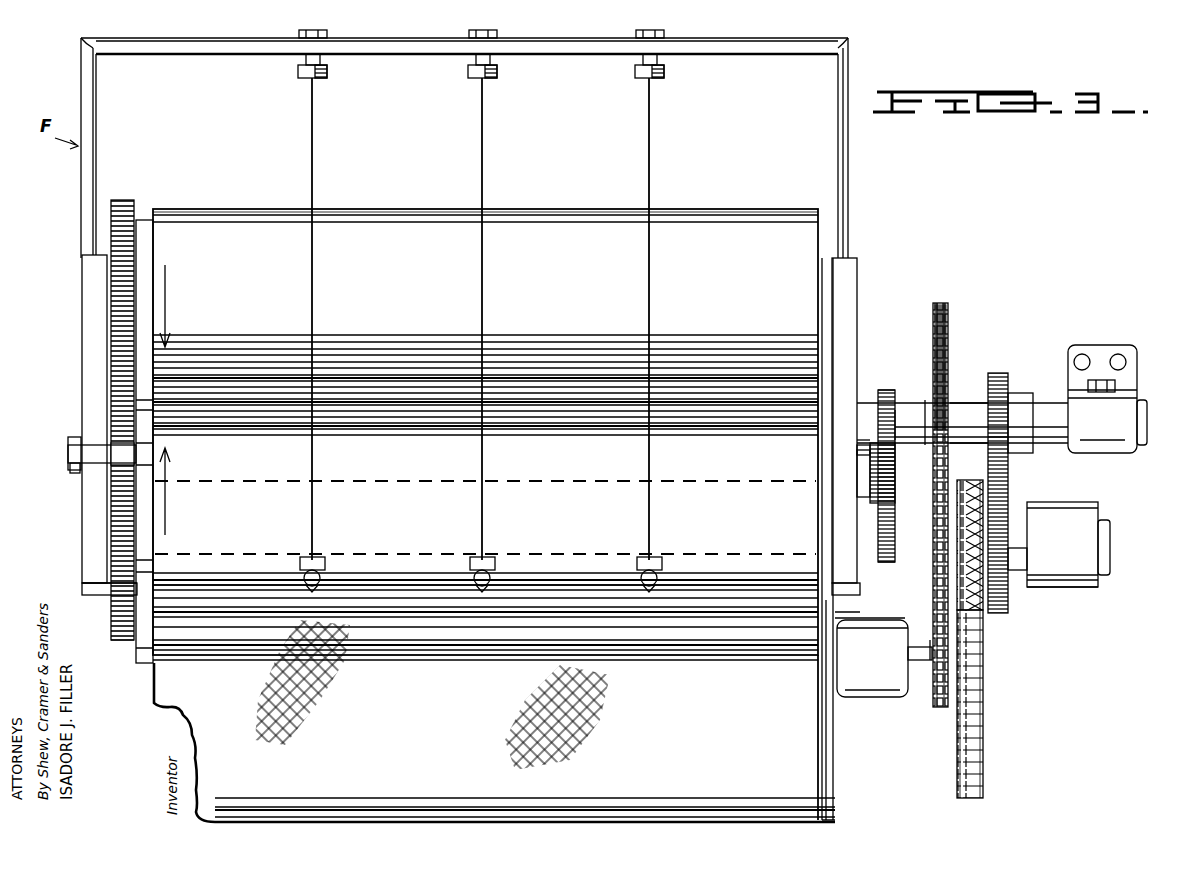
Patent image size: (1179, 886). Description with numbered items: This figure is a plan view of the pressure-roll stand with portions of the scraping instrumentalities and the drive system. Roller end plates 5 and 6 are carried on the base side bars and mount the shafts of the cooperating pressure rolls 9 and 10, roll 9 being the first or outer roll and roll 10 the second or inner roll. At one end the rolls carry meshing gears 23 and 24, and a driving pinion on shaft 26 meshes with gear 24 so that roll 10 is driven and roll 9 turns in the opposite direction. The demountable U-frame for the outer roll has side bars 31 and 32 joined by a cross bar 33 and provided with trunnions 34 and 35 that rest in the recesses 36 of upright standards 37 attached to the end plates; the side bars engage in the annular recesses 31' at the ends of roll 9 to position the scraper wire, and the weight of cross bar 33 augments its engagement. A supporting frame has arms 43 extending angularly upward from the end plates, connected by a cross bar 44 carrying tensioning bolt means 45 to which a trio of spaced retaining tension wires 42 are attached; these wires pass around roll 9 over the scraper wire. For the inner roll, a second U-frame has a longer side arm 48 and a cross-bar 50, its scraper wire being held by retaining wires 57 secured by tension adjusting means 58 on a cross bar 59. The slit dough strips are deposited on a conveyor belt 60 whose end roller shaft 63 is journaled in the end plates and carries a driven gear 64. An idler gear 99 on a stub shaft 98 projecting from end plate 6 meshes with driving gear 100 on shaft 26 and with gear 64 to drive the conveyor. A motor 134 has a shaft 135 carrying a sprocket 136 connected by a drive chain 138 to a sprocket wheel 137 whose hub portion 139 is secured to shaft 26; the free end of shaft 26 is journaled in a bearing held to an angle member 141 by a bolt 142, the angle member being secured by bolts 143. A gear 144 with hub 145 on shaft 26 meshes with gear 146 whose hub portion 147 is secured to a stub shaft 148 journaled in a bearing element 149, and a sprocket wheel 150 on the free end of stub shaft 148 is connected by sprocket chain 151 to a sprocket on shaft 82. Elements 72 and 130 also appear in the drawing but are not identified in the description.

The roller end plate 5 is at (88, 330).
The roller end plate 6 is at (845, 340).
The first or outer pressure roll 9 is at (245, 222).
The second or inner pressure roll 10 is at (244, 529).
The gear 23 is at (122, 198).
The gear 24 is at (125, 640).
The shaft 26 is at (1050, 445).
The side bar 31 is at (97, 565).
The annular recess 31' is at (488, 421).
The side bar 32 is at (832, 620).
The cross bar 33 is at (405, 660).
The trunnion 34 is at (68, 455).
The trunnion 35 is at (857, 450).
The notch or recess 36 is at (74, 472).
The upright standard 37 is at (70, 440).
The retaining tension wire 42 is at (316, 305).
The arm 43 is at (100, 108).
The cross bar 44 is at (418, 54).
The tensioning bolt means 45 is at (300, 72).
The side arm 48 is at (822, 745).
The cross-bar 50 is at (436, 800).
The retaining wire 57 is at (313, 462).
The tension adjusting means 58 is at (300, 564).
The cross bar 59 is at (387, 585).
The conveyor belt 60 is at (835, 785).
The shaft 63 is at (870, 552).
The driven gear 64 is at (890, 562).
The shaft section 72 is at (975, 410).
The shaft 82 is at (825, 496).
The stub shaft 98 is at (854, 468).
The idler gear 99 is at (895, 480).
The driving gear 100 is at (883, 392).
The bearing block 130 is at (1120, 400).
The motor 134 is at (875, 698).
The motor shaft 135 is at (920, 648).
The sprocket 136 is at (932, 690).
The sprocket wheel 137 is at (946, 360).
The drive chain 138 is at (942, 320).
The hub portion 139 is at (920, 415).
The angle member 141 is at (1118, 354).
The fastening element or bolt 142 is at (1102, 393).
The bolt 143 is at (1082, 354).
The gear 144 is at (1006, 392).
The hub 145 is at (1024, 408).
The gear 146 is at (1022, 556).
The hub portion 147 is at (1027, 536).
The stub shaft 148 is at (1104, 562).
The bearing element 149 is at (1052, 588).
The sprocket wheel 150 is at (970, 485).
The sprocket chain 151 is at (985, 612).